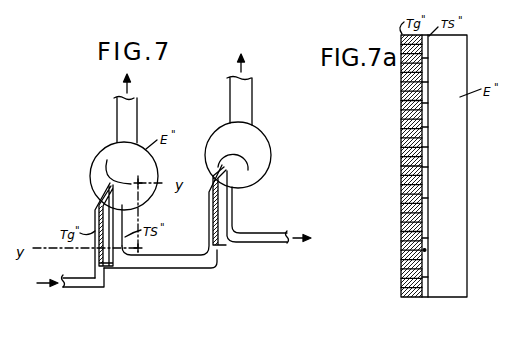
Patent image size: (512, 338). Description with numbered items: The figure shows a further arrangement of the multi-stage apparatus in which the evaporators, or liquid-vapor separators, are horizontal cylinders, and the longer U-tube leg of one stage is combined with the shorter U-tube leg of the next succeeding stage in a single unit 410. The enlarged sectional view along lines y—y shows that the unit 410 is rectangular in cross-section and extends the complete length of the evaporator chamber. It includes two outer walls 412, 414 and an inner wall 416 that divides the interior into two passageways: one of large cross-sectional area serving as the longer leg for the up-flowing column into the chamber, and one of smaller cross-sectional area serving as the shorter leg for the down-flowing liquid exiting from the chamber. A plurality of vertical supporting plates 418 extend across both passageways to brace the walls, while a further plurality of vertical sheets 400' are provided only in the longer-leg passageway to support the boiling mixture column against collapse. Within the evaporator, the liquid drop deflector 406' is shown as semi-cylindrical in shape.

In FIG. 7, the vertical sheets 400' is at (85, 229).
In FIG. 7a, the vertical sheets 400' is at (398, 166).
In FIG. 7, the liquid drop deflector 406' is at (120, 172).
In FIG. 7, the unit 410 is at (97, 208).
In FIG. 7a, the unit 410 is at (400, 34).
In FIG. 7a, the outer wall 412 is at (401, 228).
In FIG. 7a, the outer wall 414 is at (427, 250).
In FIG. 7a, the inner wall 416 is at (418, 190).
In FIG. 7a, the vertical supporting plates 418 is at (403, 157).